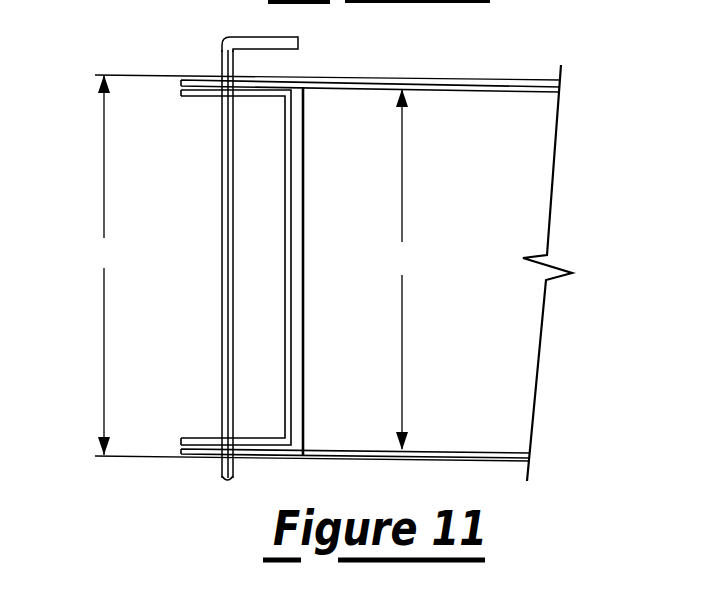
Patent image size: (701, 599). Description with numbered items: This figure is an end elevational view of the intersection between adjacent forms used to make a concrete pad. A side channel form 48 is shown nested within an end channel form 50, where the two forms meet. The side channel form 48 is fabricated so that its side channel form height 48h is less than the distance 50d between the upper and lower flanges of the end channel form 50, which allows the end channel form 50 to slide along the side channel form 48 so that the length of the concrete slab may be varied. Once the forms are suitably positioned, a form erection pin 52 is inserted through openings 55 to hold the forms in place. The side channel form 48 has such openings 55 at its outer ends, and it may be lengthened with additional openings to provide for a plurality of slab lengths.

The side channel form 48 is at (190, 99).
The side channel form height 48h is at (105, 265).
The end channel form 50 is at (498, 313).
The distance between upper and lower end channel form flanges 50d is at (407, 269).
The form erection pin 52 is at (222, 297).
The opening 55 is at (222, 75).